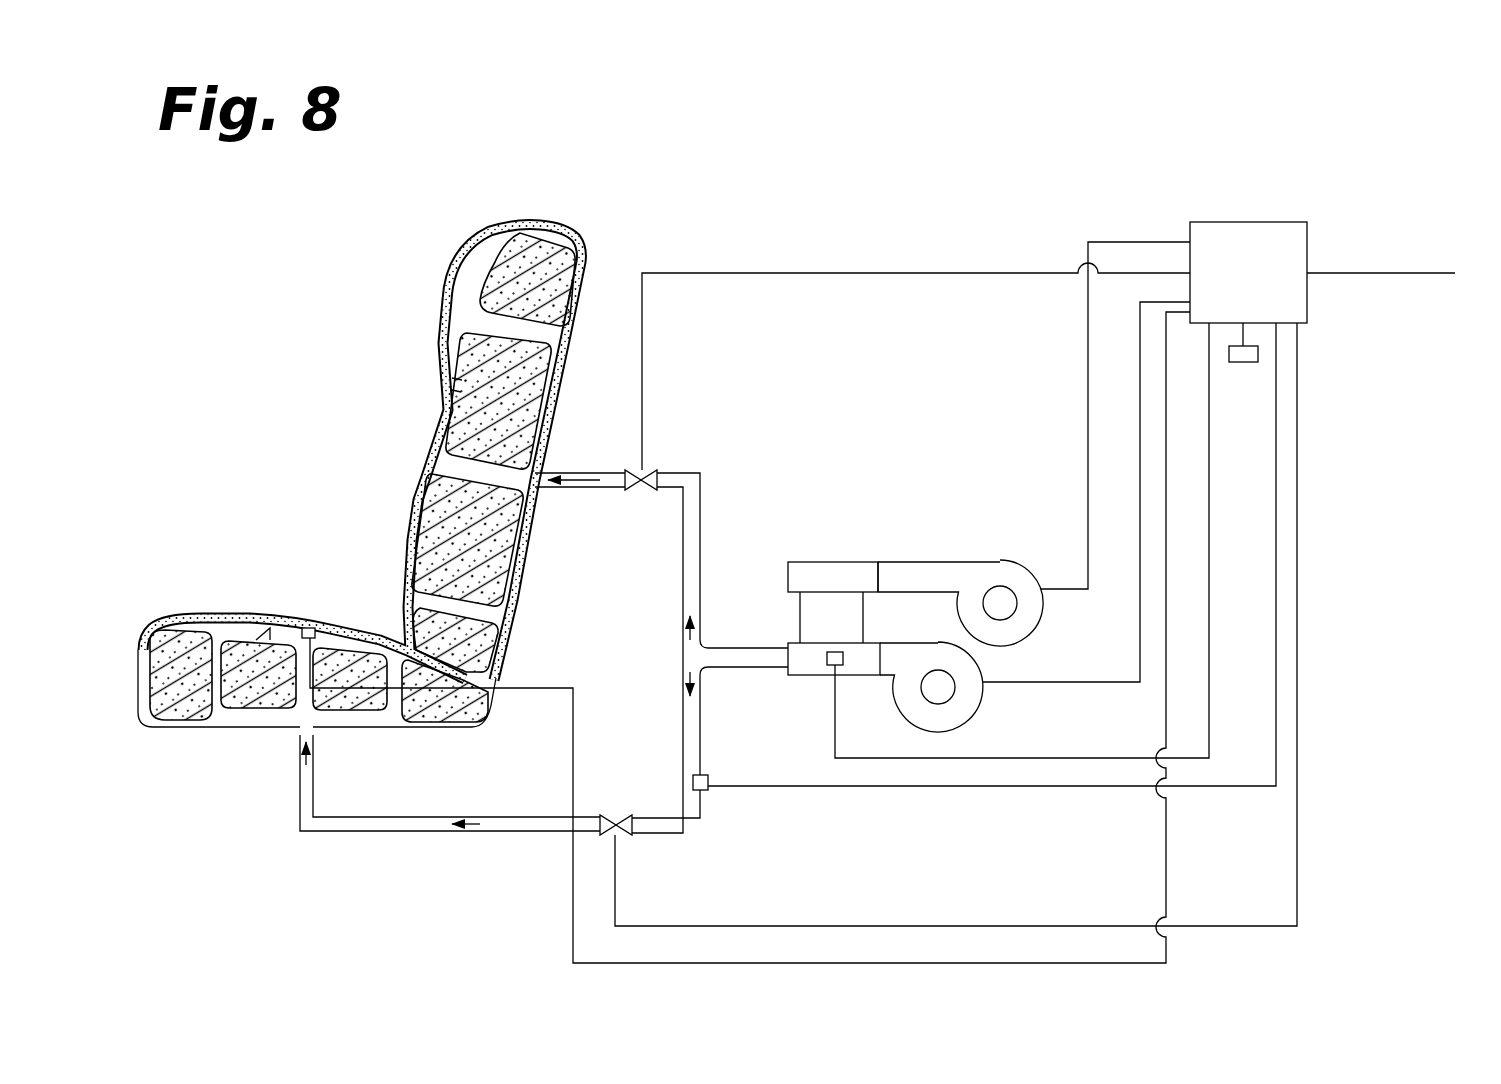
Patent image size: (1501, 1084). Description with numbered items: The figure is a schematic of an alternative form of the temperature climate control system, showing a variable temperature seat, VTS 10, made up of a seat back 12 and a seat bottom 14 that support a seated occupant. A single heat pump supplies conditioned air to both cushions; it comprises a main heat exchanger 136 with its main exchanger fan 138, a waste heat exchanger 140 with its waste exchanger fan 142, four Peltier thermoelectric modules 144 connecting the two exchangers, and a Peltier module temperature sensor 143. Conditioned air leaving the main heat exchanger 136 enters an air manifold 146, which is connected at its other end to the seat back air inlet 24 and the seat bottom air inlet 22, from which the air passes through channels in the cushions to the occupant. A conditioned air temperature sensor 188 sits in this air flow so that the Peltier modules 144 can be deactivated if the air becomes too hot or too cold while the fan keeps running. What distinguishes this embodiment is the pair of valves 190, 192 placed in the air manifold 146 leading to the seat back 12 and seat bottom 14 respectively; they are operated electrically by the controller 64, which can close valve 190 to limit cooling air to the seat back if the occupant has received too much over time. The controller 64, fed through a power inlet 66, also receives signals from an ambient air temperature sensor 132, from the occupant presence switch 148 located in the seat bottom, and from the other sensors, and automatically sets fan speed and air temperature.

The VTS 10 is at (359, 476).
The seat back 12 is at (444, 287).
The seat bottom 14 is at (246, 615).
The seat bottom air inlet 22 is at (317, 737).
The seat back air inlet 24 is at (543, 473).
The controller 64 is at (1298, 241).
The power inlet 66 is at (1366, 275).
The ambient air temperature sensor 132 is at (1240, 364).
The main heat exchanger 136 is at (803, 678).
The main exchanger fan 138 is at (787, 580).
The waste heat exchanger 140 is at (829, 561).
The waste exchanger fan 142 is at (938, 561).
The Peltier module temperature sensor 143 is at (838, 667).
The Peltier thermoelectric modules 144 is at (863, 617).
The air manifold 146 is at (700, 739).
The occupant presence switch 148 is at (312, 627).
The conditioned air temperature sensor 188 is at (701, 792).
The valve 190 is at (649, 468).
The valve 192 is at (606, 815).